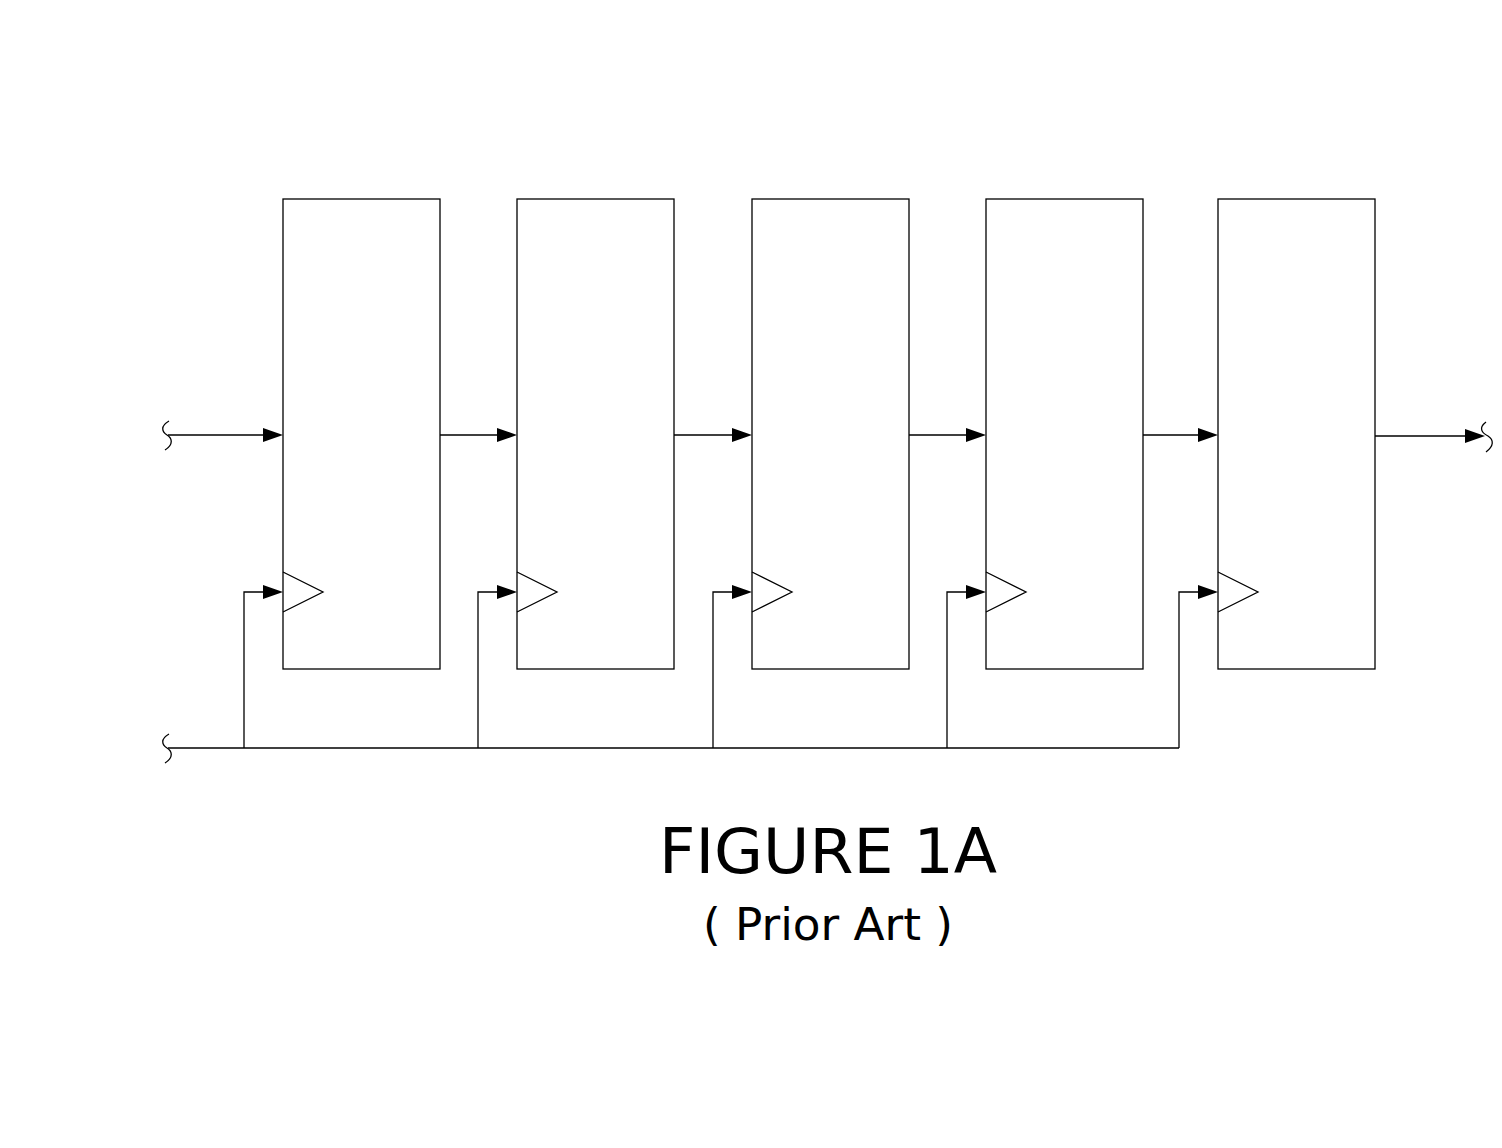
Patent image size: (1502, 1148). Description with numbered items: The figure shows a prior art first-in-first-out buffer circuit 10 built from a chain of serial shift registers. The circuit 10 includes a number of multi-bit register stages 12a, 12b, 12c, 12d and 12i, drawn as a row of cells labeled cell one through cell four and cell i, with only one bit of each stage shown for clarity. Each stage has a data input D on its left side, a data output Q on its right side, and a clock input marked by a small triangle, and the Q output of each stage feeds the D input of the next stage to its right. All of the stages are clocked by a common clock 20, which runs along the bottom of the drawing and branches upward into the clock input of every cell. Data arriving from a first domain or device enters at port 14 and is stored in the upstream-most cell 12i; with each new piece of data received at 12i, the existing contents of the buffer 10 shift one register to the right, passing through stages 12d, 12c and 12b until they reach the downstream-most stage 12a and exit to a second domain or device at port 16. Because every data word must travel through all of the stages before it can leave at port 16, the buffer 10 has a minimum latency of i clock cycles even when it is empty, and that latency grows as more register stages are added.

The prior art FIFO buffer circuit 10 is at (221, 116).
The register stage 12i is at (370, 199).
The register stage 12d is at (605, 199).
The register stage 12c is at (840, 199).
The register stage 12b is at (1083, 199).
The register stage 12a is at (1296, 406).
The port 14 is at (235, 435).
The port 16 is at (1421, 436).
The common clock 20 is at (303, 748).